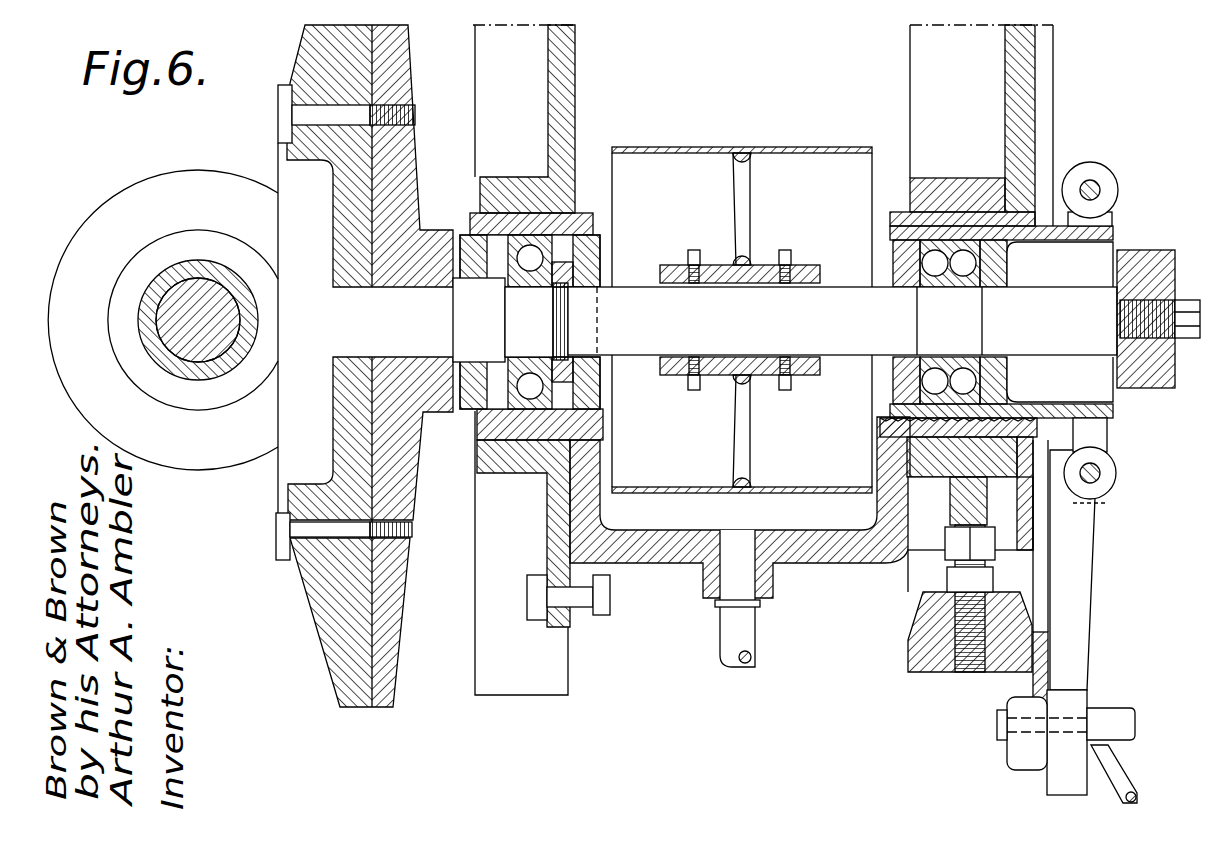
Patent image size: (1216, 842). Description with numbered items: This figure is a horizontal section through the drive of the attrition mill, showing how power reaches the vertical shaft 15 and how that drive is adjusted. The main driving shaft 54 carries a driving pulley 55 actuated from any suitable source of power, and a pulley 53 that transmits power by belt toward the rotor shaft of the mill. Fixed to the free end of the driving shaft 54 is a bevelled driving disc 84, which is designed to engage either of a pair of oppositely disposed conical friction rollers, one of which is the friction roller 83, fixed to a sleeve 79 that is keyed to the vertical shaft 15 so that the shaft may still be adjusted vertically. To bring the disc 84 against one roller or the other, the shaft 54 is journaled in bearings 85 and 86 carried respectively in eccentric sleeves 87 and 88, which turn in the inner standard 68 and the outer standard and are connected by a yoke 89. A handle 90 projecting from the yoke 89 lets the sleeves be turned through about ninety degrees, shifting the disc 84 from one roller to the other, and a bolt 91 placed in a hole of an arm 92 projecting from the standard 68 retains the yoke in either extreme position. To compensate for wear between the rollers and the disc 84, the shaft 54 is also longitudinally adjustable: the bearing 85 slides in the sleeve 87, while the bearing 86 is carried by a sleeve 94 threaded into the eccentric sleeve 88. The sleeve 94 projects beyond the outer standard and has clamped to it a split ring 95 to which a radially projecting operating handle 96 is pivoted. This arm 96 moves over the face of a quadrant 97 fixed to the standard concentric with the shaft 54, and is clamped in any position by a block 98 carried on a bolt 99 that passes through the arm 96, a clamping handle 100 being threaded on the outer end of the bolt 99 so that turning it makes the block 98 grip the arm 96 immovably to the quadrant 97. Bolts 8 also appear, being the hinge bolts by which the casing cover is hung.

The bolts 8 is at (872, 127).
The vertical shaft 15 is at (200, 310).
The pulley 53 is at (1147, 257).
The main driving shaft 54 is at (640, 332).
The driving pulley 55 is at (740, 150).
The inner standard 68 is at (560, 60).
The sleeve 79 is at (172, 370).
The friction roller 83 is at (148, 207).
The bevelled driving disc 84 is at (397, 58).
The bearing 85 is at (529, 246).
The bearing 86 is at (937, 262).
The eccentric sleeve 87 is at (490, 426).
The eccentric sleeve 88 is at (1017, 475).
The yoke 89 is at (816, 553).
The handle 90 is at (728, 632).
The bolt 91 is at (581, 600).
The arm 92 is at (562, 521).
The sleeve 94 is at (1008, 248).
The split ring 95 is at (1110, 427).
The operating handle 96 is at (1075, 667).
The quadrant 97 is at (1050, 640).
The block 98 is at (1027, 703).
The bolt 99 is at (1135, 732).
The clamping handle 100 is at (1118, 720).